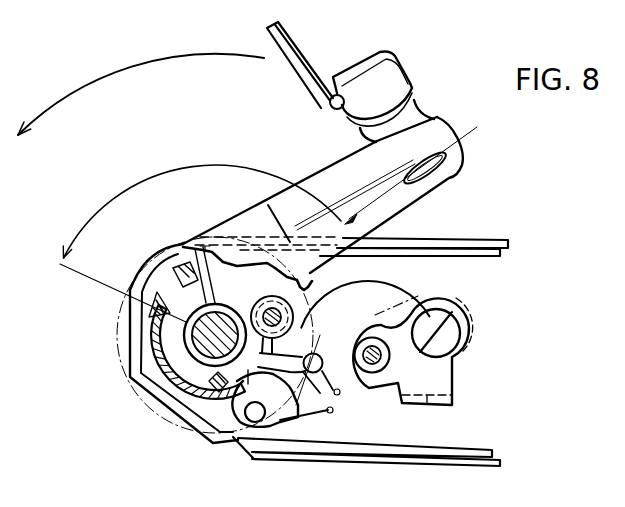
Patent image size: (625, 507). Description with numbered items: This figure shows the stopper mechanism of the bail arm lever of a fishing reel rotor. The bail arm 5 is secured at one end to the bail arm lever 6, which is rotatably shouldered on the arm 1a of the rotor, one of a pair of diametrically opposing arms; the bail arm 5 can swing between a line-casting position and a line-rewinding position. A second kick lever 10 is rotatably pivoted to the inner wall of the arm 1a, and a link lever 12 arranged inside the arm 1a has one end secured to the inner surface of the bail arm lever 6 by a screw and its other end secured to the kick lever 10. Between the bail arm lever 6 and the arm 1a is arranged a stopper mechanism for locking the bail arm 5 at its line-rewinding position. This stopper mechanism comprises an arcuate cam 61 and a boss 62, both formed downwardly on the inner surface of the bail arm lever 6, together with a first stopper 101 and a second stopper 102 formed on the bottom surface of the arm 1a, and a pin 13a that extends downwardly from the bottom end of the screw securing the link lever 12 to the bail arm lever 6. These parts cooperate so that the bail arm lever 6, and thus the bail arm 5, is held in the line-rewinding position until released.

The bail arm 5 is at (303, 77).
The arm 1a is at (396, 458).
The bail arm lever 6 is at (220, 436).
The boss 62 is at (175, 264).
The arcuate cam 61 is at (213, 358).
The pin 13a is at (292, 310).
The link lever 12 is at (386, 292).
The second kick lever 10 is at (463, 383).
The second stopper 102 is at (340, 395).
The first stopper 101 is at (297, 408).